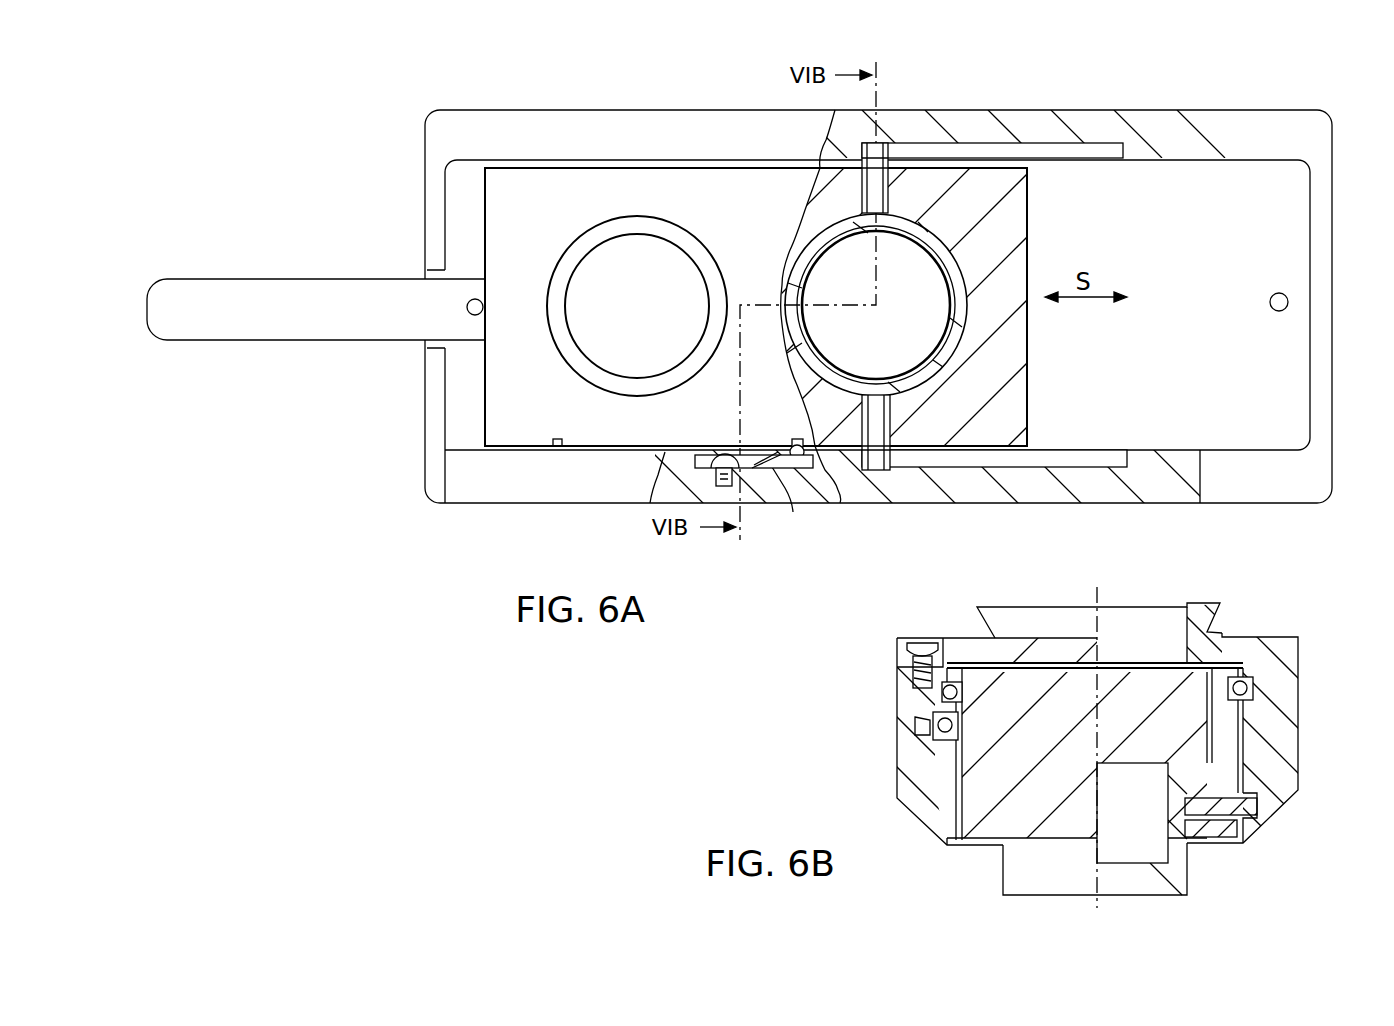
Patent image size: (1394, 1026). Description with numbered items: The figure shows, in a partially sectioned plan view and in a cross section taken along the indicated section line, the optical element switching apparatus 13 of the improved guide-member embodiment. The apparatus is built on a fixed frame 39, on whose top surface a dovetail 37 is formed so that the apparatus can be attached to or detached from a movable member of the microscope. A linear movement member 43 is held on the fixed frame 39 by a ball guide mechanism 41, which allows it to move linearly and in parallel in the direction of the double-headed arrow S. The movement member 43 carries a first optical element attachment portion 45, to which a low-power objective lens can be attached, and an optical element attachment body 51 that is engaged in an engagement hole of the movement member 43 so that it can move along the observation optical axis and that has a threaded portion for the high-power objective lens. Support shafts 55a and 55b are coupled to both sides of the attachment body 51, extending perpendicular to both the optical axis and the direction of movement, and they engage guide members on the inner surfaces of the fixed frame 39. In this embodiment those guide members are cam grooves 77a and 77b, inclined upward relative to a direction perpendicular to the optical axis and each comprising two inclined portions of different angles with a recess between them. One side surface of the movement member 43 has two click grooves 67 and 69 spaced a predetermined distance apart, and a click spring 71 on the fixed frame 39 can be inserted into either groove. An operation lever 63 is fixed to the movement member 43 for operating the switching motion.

In FIG. 6A, the optical element switching apparatus 13 is at (522, 523).
In FIG. 6B, the dovetail 37 is at (1200, 603).
In FIG. 6A, the fixed frame 39 is at (427, 395).
In FIG. 6B, the fixed frame 39 is at (1263, 637).
In FIG. 6B, the ball guide mechanism 41 is at (973, 693).
In FIG. 6A, the linear movement member 43 is at (1028, 400).
In FIG. 6B, the linear movement member 43 is at (1043, 838).
In FIG. 6A, the first optical element attachment portion 45 is at (722, 264).
In FIG. 6A, the optical element attachment body 51 is at (967, 262).
In FIG. 6B, the optical element attachment body 51 is at (1138, 763).
In FIG. 6A, the support shaft 55a is at (884, 143).
In FIG. 6A, the support shaft 55b is at (884, 470).
In FIG. 6A, the operation lever 63 is at (312, 278).
In FIG. 6A, the click groove 67 is at (556, 439).
In FIG. 6A, the click groove 69 is at (796, 439).
In FIG. 6A, the click spring 71 is at (784, 486).
In FIG. 6A, the cam groove 77a is at (1120, 158).
In FIG. 6A, the cam groove 77b is at (1116, 452).